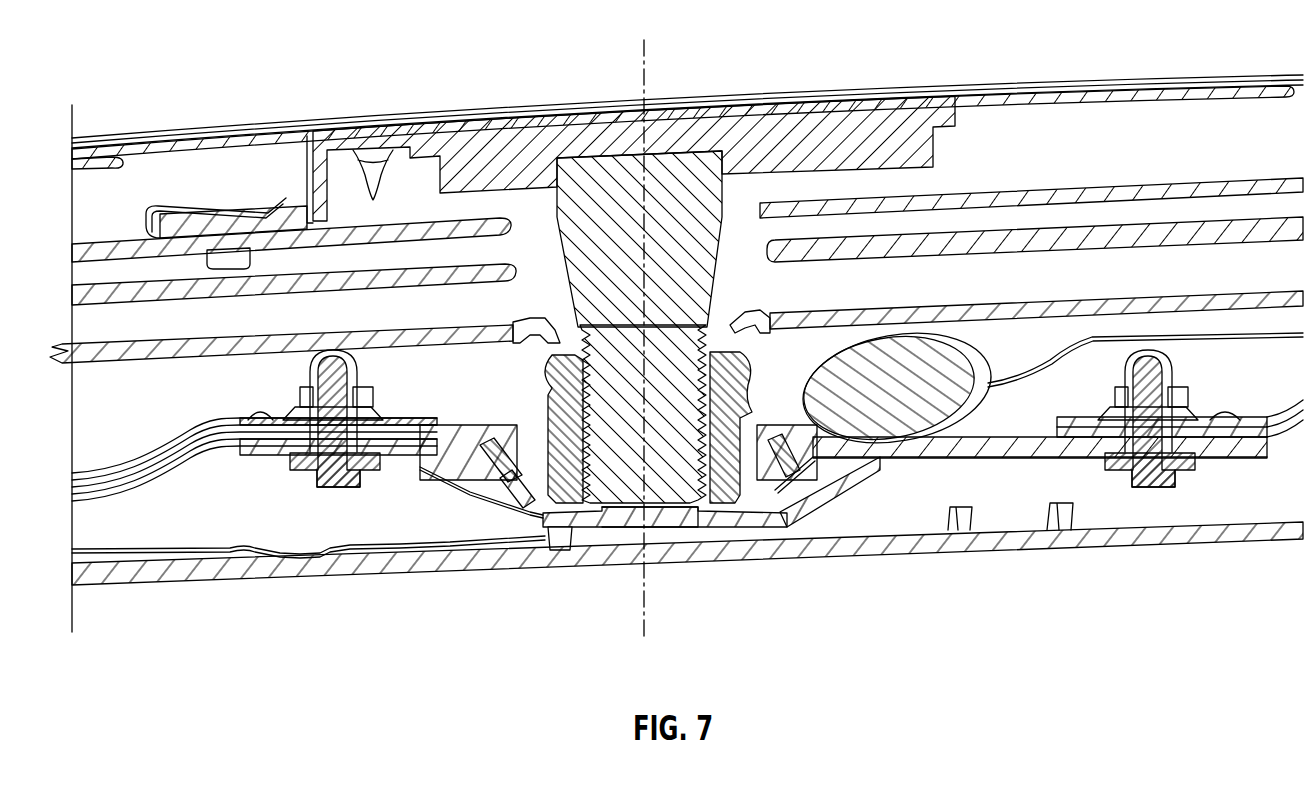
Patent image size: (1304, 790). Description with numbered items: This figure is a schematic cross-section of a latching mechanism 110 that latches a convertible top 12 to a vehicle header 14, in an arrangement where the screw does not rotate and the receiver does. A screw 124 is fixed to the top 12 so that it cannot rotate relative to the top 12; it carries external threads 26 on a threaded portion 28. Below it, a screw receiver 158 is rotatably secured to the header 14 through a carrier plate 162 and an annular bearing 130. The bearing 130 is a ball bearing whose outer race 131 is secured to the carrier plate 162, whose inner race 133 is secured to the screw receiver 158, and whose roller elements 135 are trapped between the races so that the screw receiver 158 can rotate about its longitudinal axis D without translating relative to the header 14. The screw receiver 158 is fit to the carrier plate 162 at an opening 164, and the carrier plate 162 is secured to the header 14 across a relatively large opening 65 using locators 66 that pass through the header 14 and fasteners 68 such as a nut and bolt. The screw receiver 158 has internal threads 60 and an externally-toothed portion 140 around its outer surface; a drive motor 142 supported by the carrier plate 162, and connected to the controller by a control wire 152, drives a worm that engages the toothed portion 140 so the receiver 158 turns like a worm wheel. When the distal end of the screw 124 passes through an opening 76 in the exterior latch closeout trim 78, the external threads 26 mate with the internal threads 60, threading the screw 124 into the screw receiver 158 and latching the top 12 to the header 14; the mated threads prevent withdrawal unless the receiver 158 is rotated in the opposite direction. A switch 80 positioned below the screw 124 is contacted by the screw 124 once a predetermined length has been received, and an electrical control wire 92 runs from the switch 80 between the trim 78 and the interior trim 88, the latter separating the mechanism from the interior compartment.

The top 12 is at (413, 140).
The latching mechanism 110 is at (530, 230).
The screw 124 is at (633, 193).
The internal threads 60 is at (587, 467).
The opening 76 is at (740, 317).
The exterior latch closeout trim 78 is at (940, 306).
The drive motor 142 is at (962, 352).
The control wire 152 is at (1043, 370).
The fasteners 68 is at (350, 382).
The locators 66 is at (263, 410).
The externally-toothed portion 140 is at (747, 387).
The external threads 26 is at (550, 420).
The outer race 131 is at (510, 437).
The roller elements 135 is at (473, 480).
The inner race 133 is at (530, 510).
The header 14 is at (175, 470).
The electrical control wire 92 is at (240, 548).
The annular bearing 130 is at (533, 517).
The threaded portion 28 is at (622, 468).
The switch 80 is at (683, 505).
The screw receiver 158 is at (746, 510).
The opening 164 is at (807, 497).
The carrier plate 162 is at (1027, 460).
The opening 65 is at (1057, 422).
The interior trim 88 is at (890, 548).
The longitudinal axis D is at (645, 605).